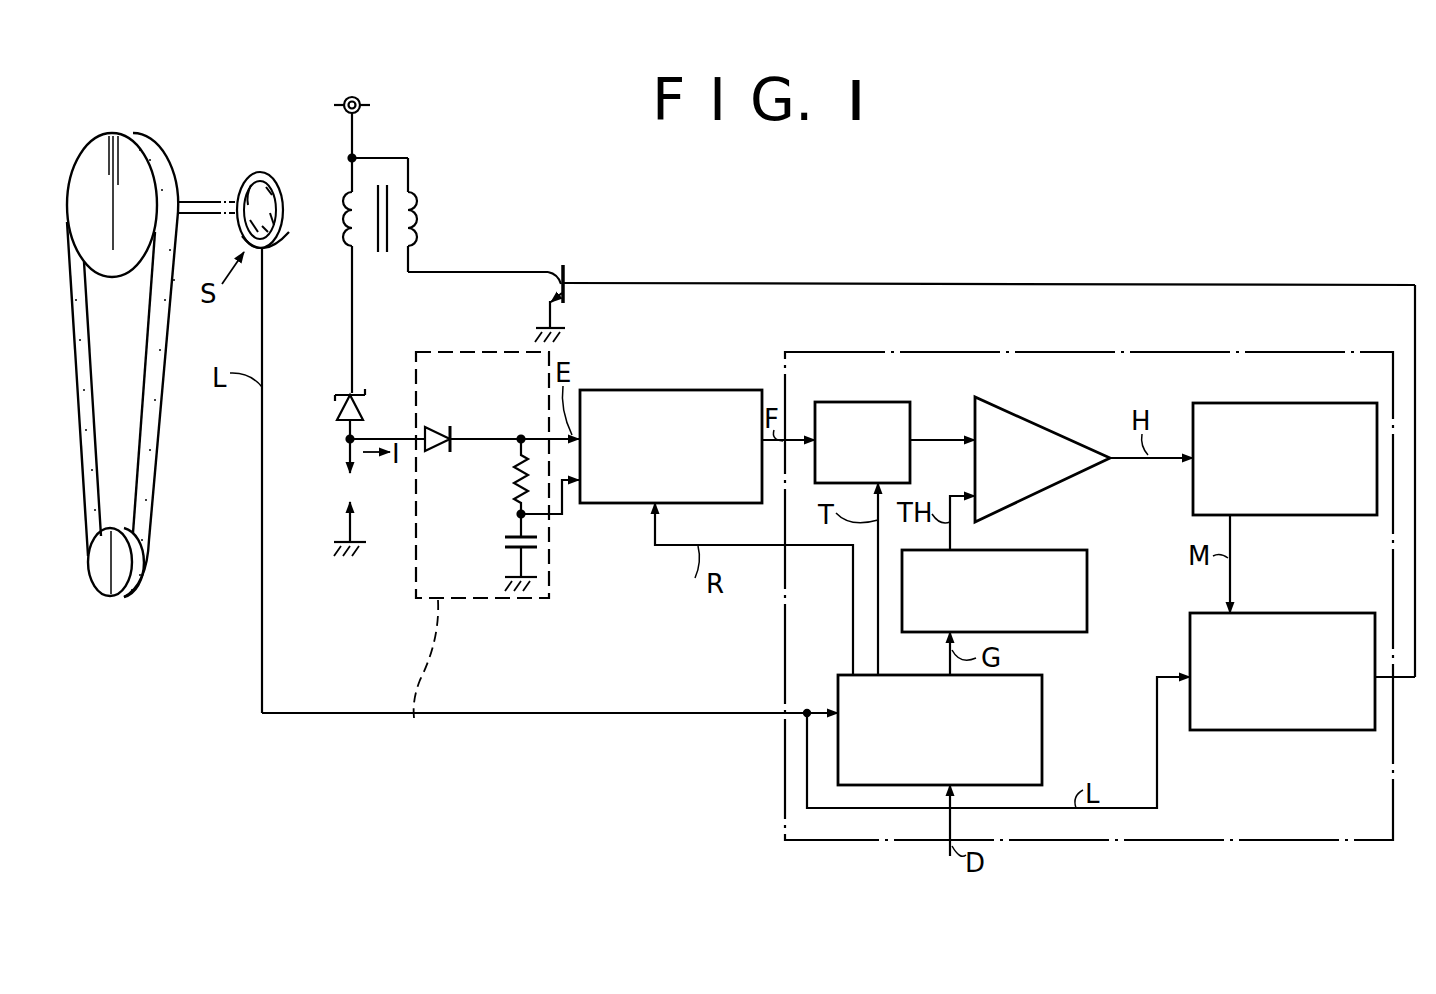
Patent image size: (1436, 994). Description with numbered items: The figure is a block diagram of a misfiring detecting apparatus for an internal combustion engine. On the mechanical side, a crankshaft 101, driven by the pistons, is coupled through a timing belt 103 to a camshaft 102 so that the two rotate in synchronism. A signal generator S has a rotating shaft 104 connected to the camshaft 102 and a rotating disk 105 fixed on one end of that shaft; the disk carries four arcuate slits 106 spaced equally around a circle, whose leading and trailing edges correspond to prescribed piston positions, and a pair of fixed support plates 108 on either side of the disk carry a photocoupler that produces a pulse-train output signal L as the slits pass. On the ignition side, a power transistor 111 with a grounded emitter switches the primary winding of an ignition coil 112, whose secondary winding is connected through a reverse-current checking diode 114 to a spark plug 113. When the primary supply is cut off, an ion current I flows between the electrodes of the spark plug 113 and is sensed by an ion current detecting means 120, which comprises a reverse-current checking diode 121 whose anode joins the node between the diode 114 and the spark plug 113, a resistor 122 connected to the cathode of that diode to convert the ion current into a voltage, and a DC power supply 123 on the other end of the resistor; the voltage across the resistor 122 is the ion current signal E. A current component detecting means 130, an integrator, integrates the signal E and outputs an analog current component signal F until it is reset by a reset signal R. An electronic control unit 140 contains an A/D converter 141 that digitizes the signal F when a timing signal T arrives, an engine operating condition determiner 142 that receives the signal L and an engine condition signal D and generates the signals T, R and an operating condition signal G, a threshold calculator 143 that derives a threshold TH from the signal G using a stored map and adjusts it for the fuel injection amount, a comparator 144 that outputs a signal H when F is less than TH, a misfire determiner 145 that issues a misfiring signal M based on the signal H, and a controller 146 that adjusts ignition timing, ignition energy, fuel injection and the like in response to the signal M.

The crankshaft 101 is at (112, 597).
The camshaft 102 is at (108, 132).
The timing belt 103 is at (160, 432).
The rotating shaft 104 is at (222, 198).
The rotating disk 105 is at (258, 172).
The arcuate slits 106 is at (271, 193).
The fixed support plates 108 is at (289, 240).
The power transistor 111 is at (547, 276).
The ignition coil 112 is at (410, 215).
The spark plug 113 is at (345, 490).
The reverse-current checking diode 114 is at (364, 405).
The ion current detecting means 120 is at (455, 352).
The reverse-current checking diode 121 is at (430, 425).
The resistor 122 is at (515, 490).
The DC power supply 123 is at (506, 540).
The current component detecting means 130 is at (683, 390).
The electronic control unit 140 is at (1091, 352).
The A/D converter 141 is at (855, 402).
The engine operating condition determiner 142 is at (1042, 695).
The threshold calculator 143 is at (1076, 550).
The comparator 144 is at (1053, 432).
The misfire determiner 145 is at (1265, 515).
The controller 146 is at (1222, 730).